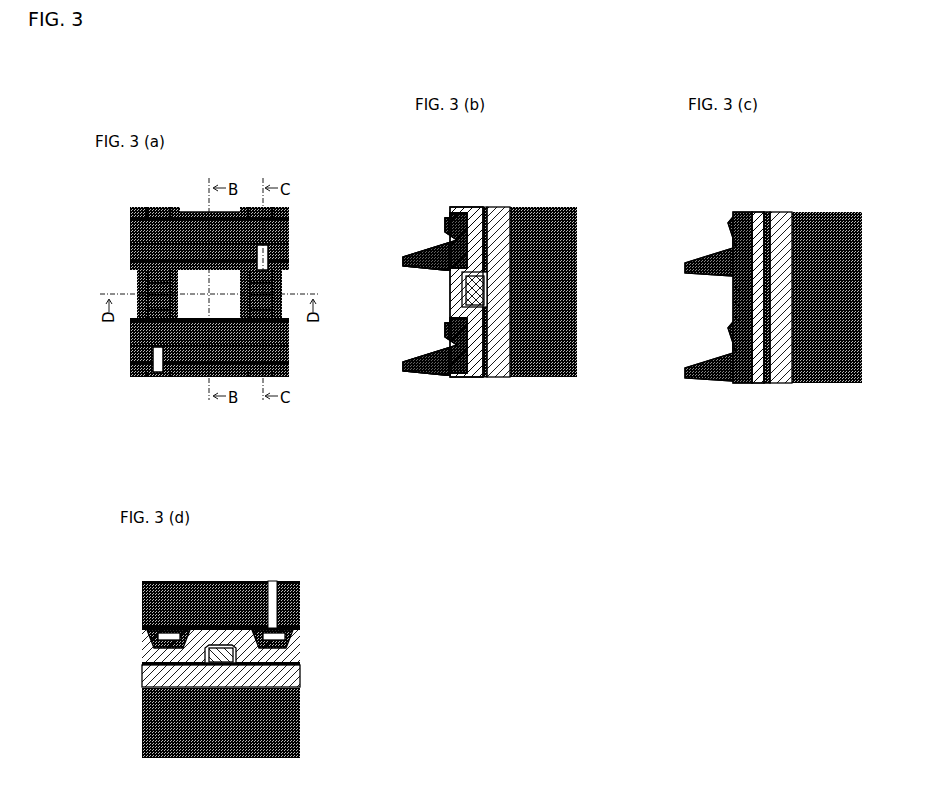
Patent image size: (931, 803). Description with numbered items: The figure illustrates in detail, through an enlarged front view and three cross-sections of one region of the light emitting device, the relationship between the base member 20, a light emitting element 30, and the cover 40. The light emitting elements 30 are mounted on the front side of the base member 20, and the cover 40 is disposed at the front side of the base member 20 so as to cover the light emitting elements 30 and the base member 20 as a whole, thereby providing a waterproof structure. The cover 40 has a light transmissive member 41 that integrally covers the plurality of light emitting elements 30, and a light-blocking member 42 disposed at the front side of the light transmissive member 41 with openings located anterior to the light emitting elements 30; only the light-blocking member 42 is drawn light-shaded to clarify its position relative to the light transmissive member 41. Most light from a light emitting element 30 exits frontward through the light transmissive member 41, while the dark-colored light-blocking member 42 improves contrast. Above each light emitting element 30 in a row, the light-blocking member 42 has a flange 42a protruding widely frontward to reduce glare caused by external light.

The base member 20 is at (497, 206).
The light emitting element 30 is at (462, 287).
The cover 40 is at (463, 156).
The light transmissive member 41 is at (223, 285).
The light-blocking member 42 is at (132, 337).
The flange 42a is at (433, 238).